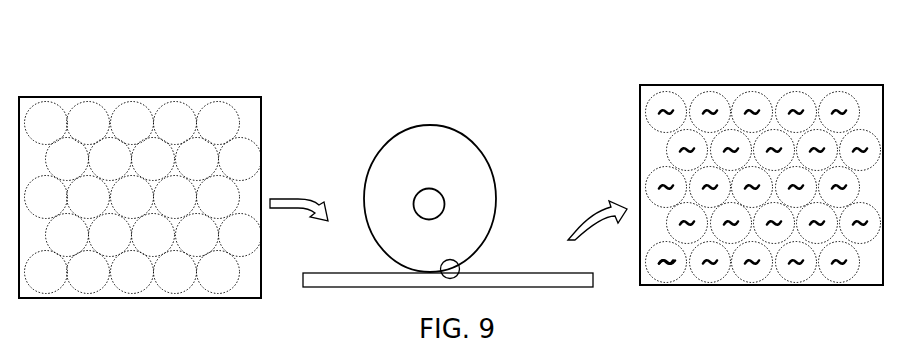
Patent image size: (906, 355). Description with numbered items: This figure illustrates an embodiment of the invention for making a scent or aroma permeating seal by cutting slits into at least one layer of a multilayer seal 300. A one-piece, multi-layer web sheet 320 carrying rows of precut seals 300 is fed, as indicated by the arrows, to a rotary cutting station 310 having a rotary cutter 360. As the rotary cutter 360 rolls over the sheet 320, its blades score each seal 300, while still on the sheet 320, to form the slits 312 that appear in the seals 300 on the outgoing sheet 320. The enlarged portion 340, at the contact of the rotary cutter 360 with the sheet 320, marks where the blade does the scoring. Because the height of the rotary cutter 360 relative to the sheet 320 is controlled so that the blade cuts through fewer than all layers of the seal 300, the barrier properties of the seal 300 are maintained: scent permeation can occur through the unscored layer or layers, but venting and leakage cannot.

The rotary cutting station 310 is at (492, 88).
The multi-layer web sheet 320 is at (157, 298).
The multilayer seal 300 is at (675, 276).
The slits 312 is at (666, 261).
The rotary cutter 360 is at (392, 140).
The enlarged portion 340 is at (460, 264).